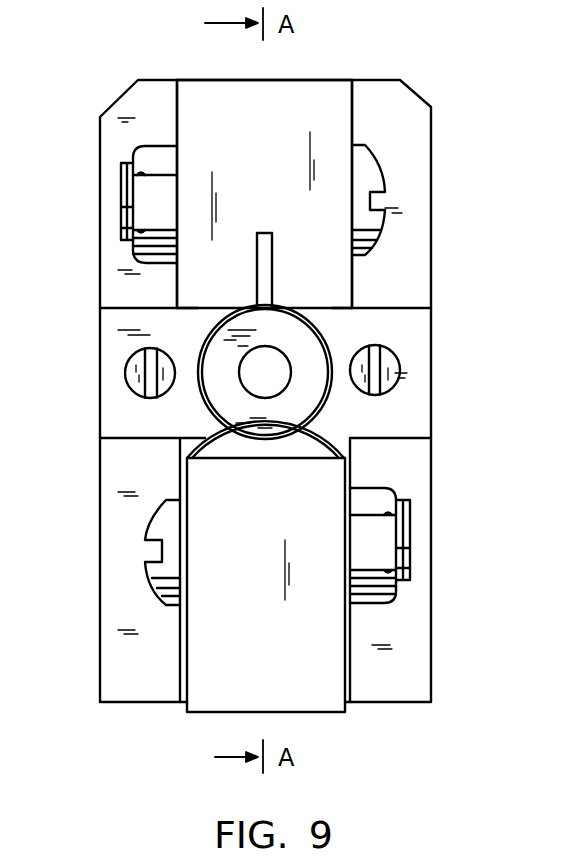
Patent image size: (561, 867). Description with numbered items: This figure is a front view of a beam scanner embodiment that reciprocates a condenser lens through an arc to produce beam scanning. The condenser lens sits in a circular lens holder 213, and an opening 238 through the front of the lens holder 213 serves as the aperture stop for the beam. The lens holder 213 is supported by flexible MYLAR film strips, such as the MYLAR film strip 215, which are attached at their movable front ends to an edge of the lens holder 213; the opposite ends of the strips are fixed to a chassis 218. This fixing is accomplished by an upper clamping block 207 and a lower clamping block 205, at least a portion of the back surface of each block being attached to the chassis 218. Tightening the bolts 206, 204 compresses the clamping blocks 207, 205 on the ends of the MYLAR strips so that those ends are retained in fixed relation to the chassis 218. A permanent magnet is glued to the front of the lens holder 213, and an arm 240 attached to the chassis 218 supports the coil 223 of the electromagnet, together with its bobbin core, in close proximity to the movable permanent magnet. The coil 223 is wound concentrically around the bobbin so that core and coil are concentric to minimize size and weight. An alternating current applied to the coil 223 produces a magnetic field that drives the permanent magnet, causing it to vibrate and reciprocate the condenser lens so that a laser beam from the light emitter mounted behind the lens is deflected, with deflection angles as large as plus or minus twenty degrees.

The bolt 204 is at (145, 568).
The lower clamping block 205 is at (180, 465).
The bolt 206 is at (125, 195).
The upper clamping block 207 is at (354, 106).
The lens holder 213 is at (332, 320).
The MYLAR film strip 215 is at (272, 258).
The chassis 218 is at (432, 145).
The coil 223 is at (298, 433).
The opening 238 is at (283, 382).
The arm 240 is at (322, 682).